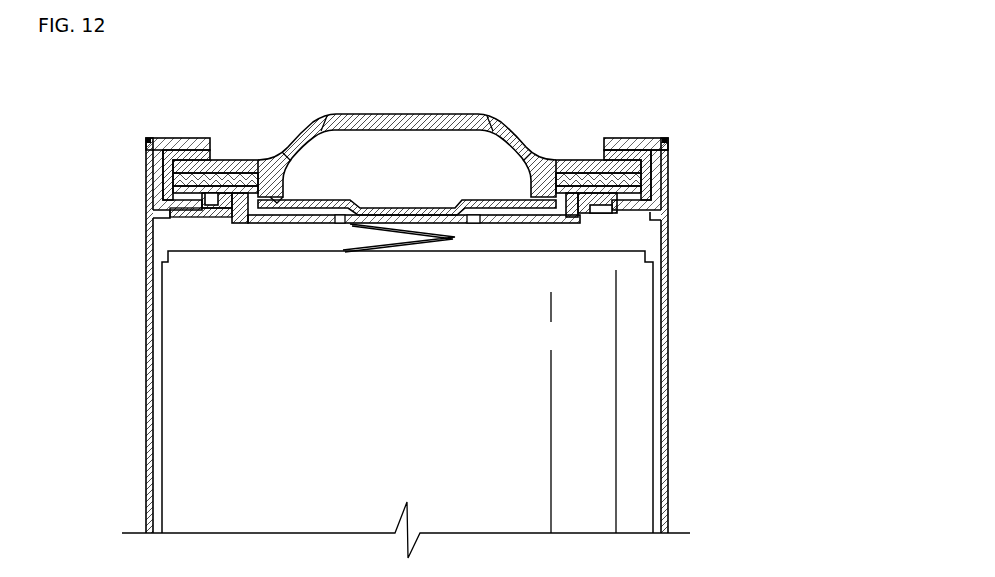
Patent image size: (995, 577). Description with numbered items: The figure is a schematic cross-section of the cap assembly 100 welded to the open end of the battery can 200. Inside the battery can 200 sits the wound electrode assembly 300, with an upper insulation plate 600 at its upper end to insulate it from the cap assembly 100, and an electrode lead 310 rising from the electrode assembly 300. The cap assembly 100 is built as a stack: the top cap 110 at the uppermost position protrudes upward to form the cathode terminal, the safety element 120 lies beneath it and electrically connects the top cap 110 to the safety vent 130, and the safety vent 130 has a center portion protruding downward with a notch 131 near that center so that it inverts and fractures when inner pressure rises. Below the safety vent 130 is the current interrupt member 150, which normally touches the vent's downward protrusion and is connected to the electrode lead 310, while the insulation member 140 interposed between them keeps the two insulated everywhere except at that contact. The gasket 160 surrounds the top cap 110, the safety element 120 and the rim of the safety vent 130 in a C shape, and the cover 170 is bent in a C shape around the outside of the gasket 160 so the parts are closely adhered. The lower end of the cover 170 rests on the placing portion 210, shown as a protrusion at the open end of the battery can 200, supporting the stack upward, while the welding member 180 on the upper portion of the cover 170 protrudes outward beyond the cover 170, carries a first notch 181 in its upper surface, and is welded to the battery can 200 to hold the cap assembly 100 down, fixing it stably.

The cap assembly 100 is at (733, 93).
The top cap 110 is at (642, 165).
The safety element 120 is at (638, 177).
The safety vent 130 is at (453, 195).
The notch 131 is at (277, 203).
The insulation member 140 is at (593, 196).
The current interrupt member 150 is at (600, 212).
The gasket 160 is at (652, 152).
The cover 170 is at (667, 146).
The welding member 180 is at (195, 139).
The first notch 181 is at (148, 137).
The battery can 200 is at (663, 372).
The placing portion 210 is at (158, 218).
The electrode assembly 300 is at (637, 331).
The electrode lead 310 is at (455, 237).
The upper insulation plate 600 is at (604, 219).